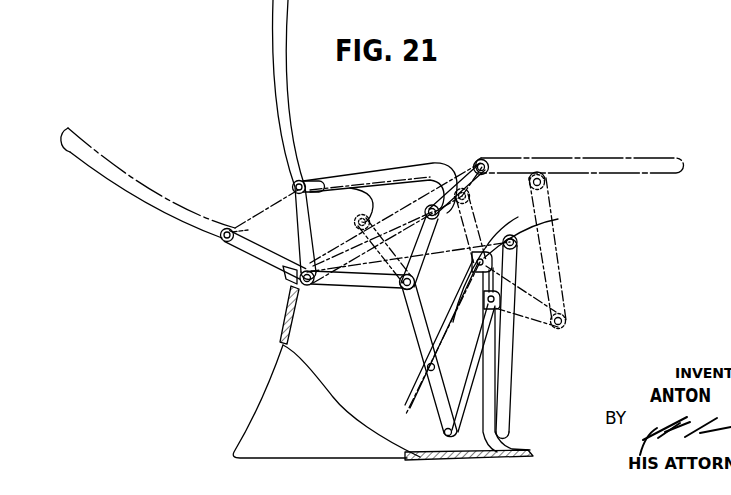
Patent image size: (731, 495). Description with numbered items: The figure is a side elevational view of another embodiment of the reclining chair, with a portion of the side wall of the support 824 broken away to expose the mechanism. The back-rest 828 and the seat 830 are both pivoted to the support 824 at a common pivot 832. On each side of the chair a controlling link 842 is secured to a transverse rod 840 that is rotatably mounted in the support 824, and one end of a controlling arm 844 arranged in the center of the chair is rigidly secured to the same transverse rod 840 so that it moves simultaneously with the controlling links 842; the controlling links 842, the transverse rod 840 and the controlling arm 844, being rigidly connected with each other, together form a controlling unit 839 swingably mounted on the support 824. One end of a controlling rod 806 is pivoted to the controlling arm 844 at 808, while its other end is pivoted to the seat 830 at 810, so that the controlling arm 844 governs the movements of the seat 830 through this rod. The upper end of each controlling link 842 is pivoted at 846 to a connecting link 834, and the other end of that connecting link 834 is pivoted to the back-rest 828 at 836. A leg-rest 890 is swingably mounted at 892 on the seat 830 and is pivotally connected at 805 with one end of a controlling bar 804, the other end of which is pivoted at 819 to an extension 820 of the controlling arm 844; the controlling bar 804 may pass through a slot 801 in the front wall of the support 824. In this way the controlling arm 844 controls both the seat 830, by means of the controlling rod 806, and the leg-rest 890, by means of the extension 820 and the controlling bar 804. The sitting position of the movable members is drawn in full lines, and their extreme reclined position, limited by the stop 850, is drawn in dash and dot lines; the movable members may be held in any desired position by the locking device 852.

The back-rest 828 is at (290, 121).
The pivot of connecting link to back-rest 836 is at (306, 182).
The locking device 852 is at (320, 180).
The connecting link 834 is at (383, 176).
The pivot of controlling link to connecting link 846 is at (440, 172).
The controlling unit 839 is at (414, 233).
The controlling link 842 is at (434, 219).
The pivot of controlling rod to seat 810 is at (518, 217).
The controlling rod 806 is at (453, 322).
The pivot of leg-rest on seat 892 is at (550, 224).
The pivot of leg-rest to controlling bar 805 is at (494, 298).
The slot 801 is at (496, 358).
The stop 850 is at (282, 278).
The seat 830 is at (342, 272).
The pivot of back-rest and seat to support 832 is at (310, 290).
The transverse rod 840 is at (401, 296).
The controlling arm 844 is at (413, 333).
The extension of controlling arm 820 is at (435, 395).
The pivot of controlling rod to controlling arm 808 is at (429, 372).
The pivot of controlling bar to extension 819 is at (446, 433).
The leg-rest 890 is at (505, 388).
The controlling bar 804 is at (463, 388).
The support 824 is at (274, 371).